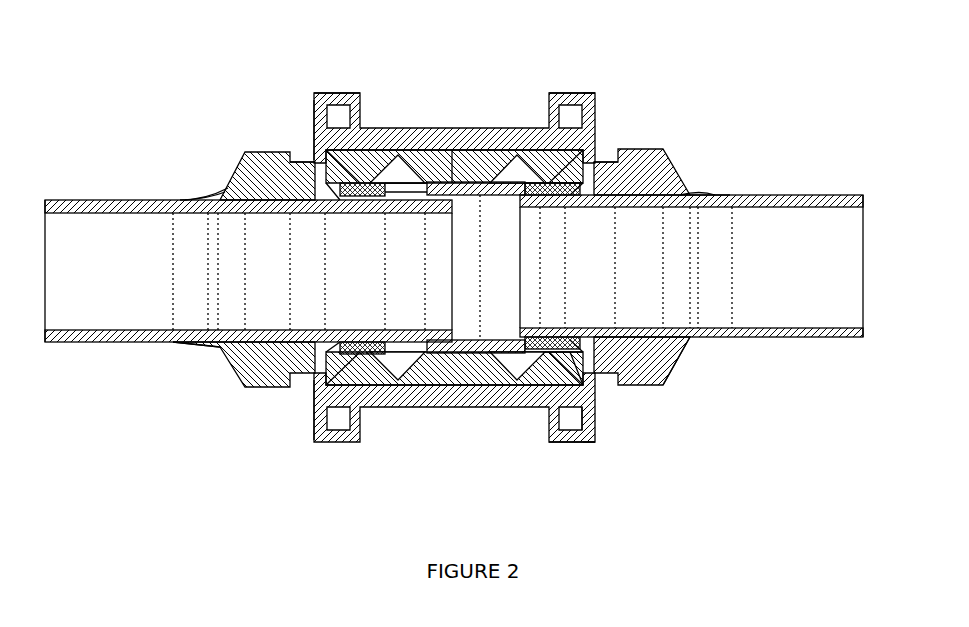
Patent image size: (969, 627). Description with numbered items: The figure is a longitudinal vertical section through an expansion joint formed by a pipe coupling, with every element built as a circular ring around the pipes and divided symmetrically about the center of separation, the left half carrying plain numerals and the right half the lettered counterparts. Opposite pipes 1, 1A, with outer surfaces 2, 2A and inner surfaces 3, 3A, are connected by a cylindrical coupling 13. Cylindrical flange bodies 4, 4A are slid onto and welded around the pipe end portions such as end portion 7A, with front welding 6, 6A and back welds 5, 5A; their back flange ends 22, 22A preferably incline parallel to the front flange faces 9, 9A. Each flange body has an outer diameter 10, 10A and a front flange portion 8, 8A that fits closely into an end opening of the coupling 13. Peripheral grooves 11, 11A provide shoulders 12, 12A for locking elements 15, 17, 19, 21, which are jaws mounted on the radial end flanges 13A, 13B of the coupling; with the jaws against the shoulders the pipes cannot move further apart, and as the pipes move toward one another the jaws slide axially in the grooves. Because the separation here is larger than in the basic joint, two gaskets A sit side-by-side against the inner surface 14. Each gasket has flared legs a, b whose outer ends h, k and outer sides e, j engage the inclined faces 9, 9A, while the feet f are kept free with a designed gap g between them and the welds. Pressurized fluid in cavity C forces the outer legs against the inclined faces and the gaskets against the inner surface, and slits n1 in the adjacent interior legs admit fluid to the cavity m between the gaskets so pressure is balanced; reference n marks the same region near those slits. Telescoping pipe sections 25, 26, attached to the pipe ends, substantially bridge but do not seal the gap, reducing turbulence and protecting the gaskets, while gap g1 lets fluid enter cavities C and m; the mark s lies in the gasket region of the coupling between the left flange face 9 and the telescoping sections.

The pipe 1 is at (62, 330).
The pipe 1A is at (843, 328).
The outer surface 2 is at (58, 200).
The outer surface 2A is at (812, 195).
The inner surface 3 is at (65, 214).
The inner surface 3A is at (820, 210).
The cylindrical flange body 4 is at (218, 358).
The cylindrical flange body 4A is at (668, 356).
The back weld 5 is at (200, 196).
The back weld 5A is at (708, 190).
The front welding 6 is at (364, 193).
The front welding 6A is at (552, 185).
The end portion 7A is at (545, 192).
The front flange portion 8 is at (372, 130).
The front flange portion 8A is at (597, 112).
The front flange face 9 is at (338, 193).
The front flange face 9A is at (592, 380).
The outer diameter 10 is at (245, 153).
The outer diameter 10A is at (648, 150).
The peripheral groove 11 is at (300, 162).
The peripheral groove 11A is at (635, 160).
The shoulder 12 is at (300, 197).
The shoulder 12A is at (568, 197).
The cylindrical coupling 13 is at (505, 182).
The radial end flange 13A is at (330, 93).
The radial end flange 13B is at (577, 445).
The inner surface 14 is at (450, 160).
The locking element 15 is at (318, 140).
The locking element 17 is at (330, 432).
The locking element 19 is at (578, 98).
The locking element 21 is at (585, 432).
The back flange end 22 is at (222, 198).
The back flange end 22A is at (690, 186).
The telescoping pipe section 25 is at (438, 200).
The telescoping pipe section 26 is at (532, 198).
The gasket leg a is at (468, 165).
The gasket leg b is at (522, 200).
The outer side of gasket leg e is at (395, 150).
The gasket foot f is at (456, 197).
The designed gap g is at (352, 342).
The gap g1 is at (470, 235).
The outer end of gasket leg h is at (332, 200).
The outer side of gasket leg j is at (532, 407).
The outer end of gasket leg k is at (643, 387).
The cavity between gaskets m is at (418, 158).
The reference point n is at (484, 320).
The slit n1 is at (486, 322).
The reference point s is at (390, 216).
The gasket A is at (430, 215).
The cavity C is at (418, 260).